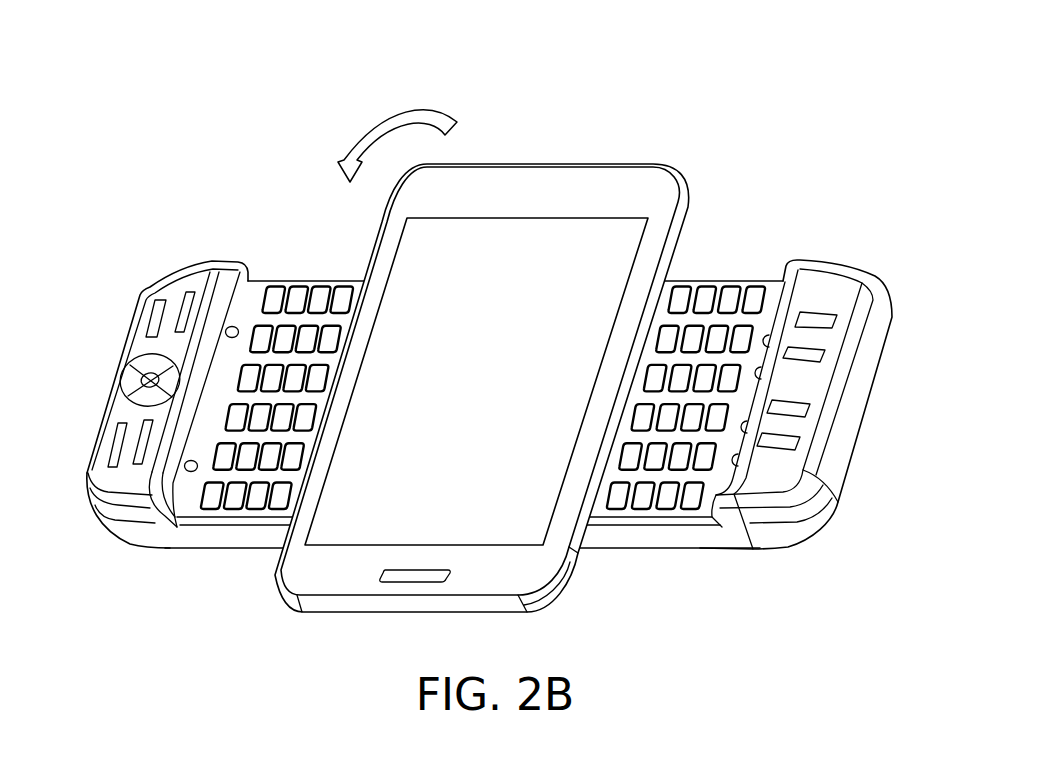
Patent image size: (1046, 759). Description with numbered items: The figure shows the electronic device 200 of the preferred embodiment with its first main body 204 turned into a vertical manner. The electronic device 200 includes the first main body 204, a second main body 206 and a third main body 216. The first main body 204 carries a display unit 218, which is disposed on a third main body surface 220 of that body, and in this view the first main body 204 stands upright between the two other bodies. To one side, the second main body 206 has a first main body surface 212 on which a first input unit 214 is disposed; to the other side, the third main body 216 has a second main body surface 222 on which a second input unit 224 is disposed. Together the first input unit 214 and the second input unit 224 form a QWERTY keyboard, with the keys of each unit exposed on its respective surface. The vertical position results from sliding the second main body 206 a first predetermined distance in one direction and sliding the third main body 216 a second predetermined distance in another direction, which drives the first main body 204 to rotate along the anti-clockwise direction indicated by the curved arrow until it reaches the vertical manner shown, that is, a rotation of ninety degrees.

The electronic device 200 is at (815, 57).
The first main body 204 is at (480, 105).
The third main body surface 220 is at (475, 197).
The display unit 218 is at (527, 240).
The third main body 216 is at (187, 163).
The second main body surface 222 is at (240, 303).
The second input unit 224 is at (306, 291).
The second main body 206 is at (692, 162).
The first main body surface 212 is at (777, 288).
The first input unit 214 is at (685, 287).